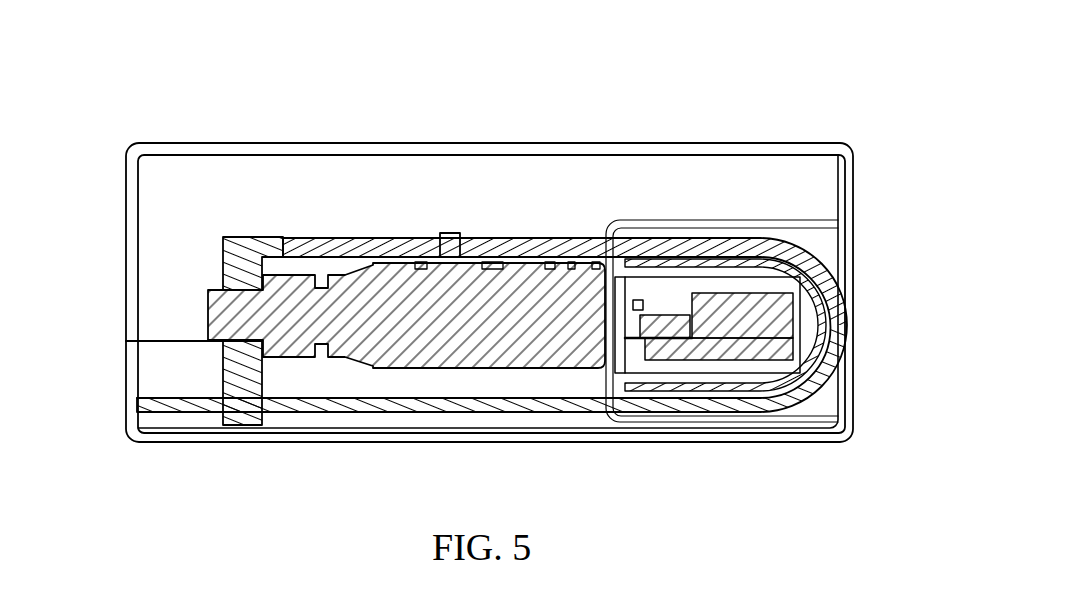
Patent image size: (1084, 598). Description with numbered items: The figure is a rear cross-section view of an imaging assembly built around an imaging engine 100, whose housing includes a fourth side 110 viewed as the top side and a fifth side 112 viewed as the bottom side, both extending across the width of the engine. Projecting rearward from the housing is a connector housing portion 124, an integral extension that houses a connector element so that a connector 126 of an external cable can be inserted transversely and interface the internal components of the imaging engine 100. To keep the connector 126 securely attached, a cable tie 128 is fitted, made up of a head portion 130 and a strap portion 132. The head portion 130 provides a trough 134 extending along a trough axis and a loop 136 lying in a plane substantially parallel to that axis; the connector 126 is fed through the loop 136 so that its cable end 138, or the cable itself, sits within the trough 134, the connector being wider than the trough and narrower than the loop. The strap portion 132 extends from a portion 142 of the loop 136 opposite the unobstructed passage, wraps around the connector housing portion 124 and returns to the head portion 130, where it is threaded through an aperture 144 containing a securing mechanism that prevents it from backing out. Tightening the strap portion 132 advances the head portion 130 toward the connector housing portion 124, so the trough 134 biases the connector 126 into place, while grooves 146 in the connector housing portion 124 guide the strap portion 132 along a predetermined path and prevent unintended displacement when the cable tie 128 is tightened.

The imaging engine 100 is at (175, 55).
The fourth side 110 is at (478, 125).
The fifth side 112 is at (686, 462).
The connector housing portion 124 is at (872, 270).
The connector 126 is at (369, 338).
The cable tie 128 is at (240, 268).
The head portion 130 is at (331, 195).
The strap portion 132 is at (455, 420).
The trough 134 is at (236, 351).
The loop 136 is at (407, 197).
The cable end 138 is at (243, 255).
The portion of the loop 142 is at (478, 222).
The aperture 144 is at (243, 424).
The grooves 146 is at (744, 225).